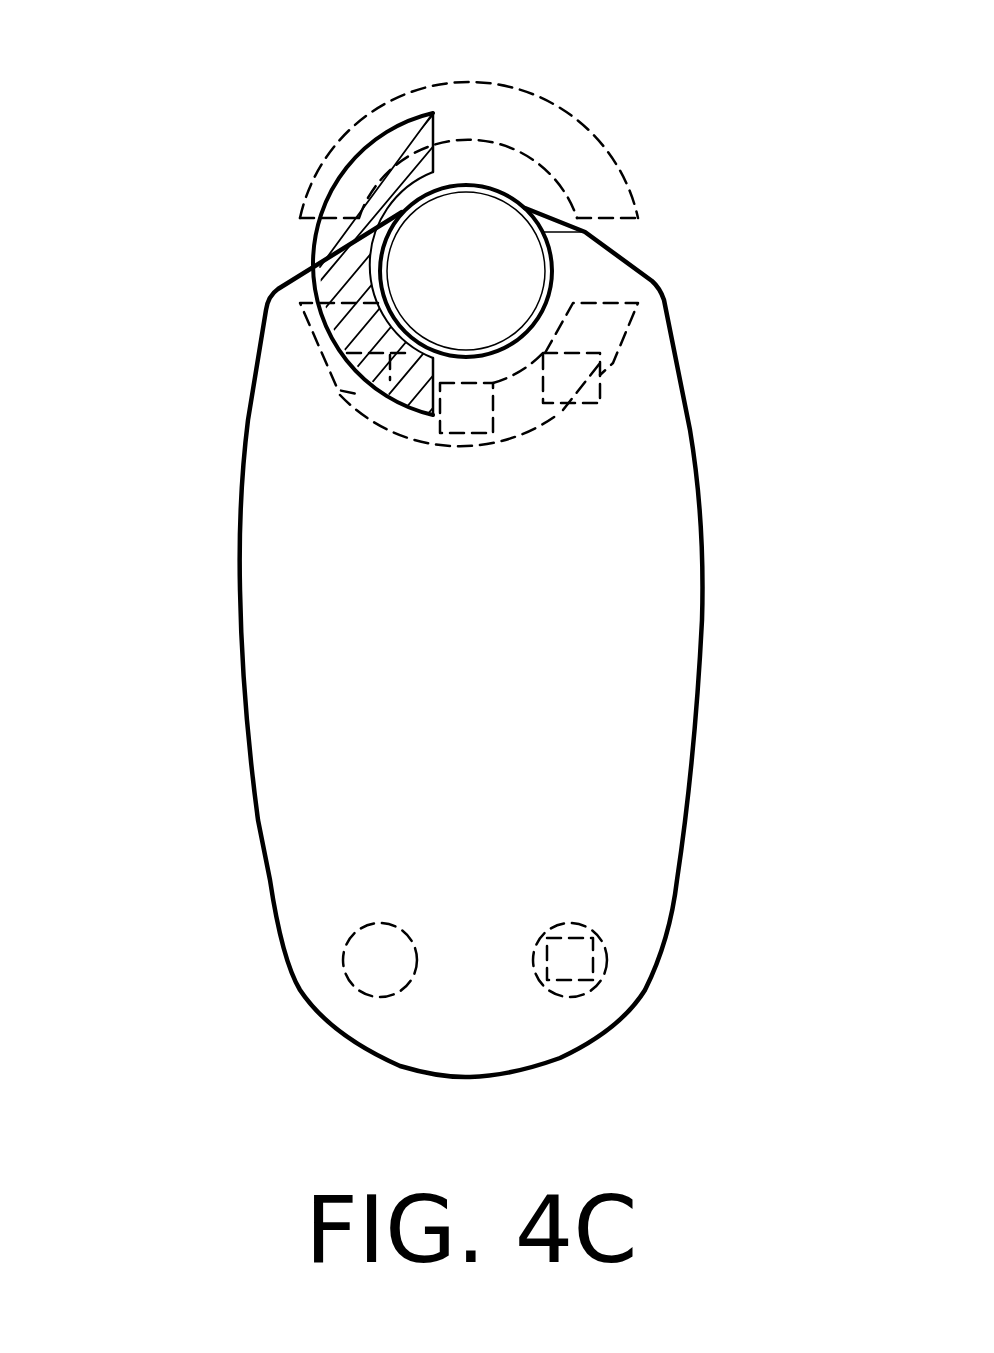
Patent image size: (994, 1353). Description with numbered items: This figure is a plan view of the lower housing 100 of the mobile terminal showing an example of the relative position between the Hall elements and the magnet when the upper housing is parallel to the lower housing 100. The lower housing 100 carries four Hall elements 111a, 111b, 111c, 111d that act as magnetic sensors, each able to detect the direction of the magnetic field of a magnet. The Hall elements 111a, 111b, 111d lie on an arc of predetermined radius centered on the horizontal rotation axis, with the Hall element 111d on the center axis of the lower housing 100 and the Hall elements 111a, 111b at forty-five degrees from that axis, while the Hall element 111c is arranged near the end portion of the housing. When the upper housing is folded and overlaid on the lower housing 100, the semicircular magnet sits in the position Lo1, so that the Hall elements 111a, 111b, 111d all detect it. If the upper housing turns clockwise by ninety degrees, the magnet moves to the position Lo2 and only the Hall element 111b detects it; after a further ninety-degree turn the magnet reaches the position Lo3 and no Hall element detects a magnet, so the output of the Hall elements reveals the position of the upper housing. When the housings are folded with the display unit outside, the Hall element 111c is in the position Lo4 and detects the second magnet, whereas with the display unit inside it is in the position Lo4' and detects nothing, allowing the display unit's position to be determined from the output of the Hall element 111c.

The lower housing 100 is at (232, 679).
The Hall element 111a is at (605, 363).
The Hall element 111b is at (338, 392).
The Hall element 111c is at (597, 953).
The Hall element 111d is at (503, 440).
The position Lo1 is at (557, 415).
The position Lo2 is at (313, 255).
The position Lo3 is at (600, 146).
The position Lo4 is at (684, 999).
The position Lo4' is at (258, 996).